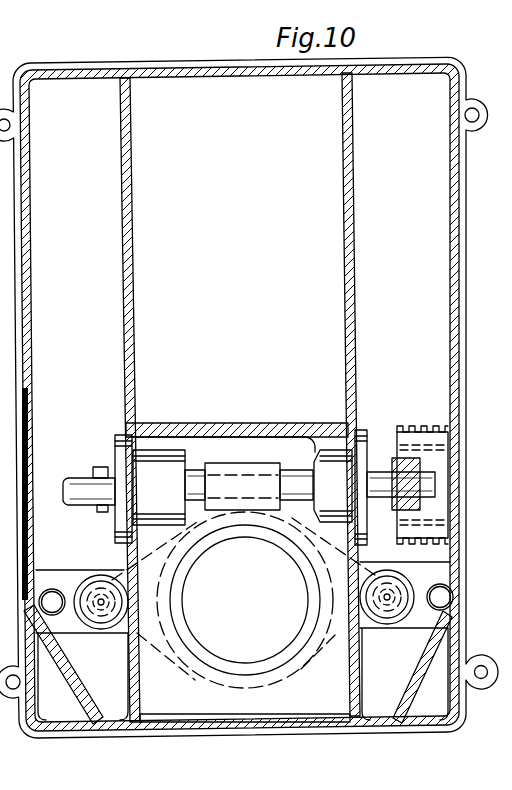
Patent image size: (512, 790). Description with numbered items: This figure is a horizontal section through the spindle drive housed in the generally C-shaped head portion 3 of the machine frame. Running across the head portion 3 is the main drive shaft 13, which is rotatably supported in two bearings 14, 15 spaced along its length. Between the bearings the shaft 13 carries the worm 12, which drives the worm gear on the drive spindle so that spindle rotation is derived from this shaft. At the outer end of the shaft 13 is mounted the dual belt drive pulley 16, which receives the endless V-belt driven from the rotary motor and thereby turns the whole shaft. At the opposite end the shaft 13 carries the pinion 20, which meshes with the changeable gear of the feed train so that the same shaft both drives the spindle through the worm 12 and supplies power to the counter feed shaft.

The head portion 3 is at (135, 392).
The worm 12 is at (245, 470).
The main drive shaft 13 is at (78, 500).
The bearing 14 is at (168, 480).
The bearing 15 is at (338, 478).
The dual belt drive pulley 16 is at (432, 420).
The pinion 20 is at (103, 512).